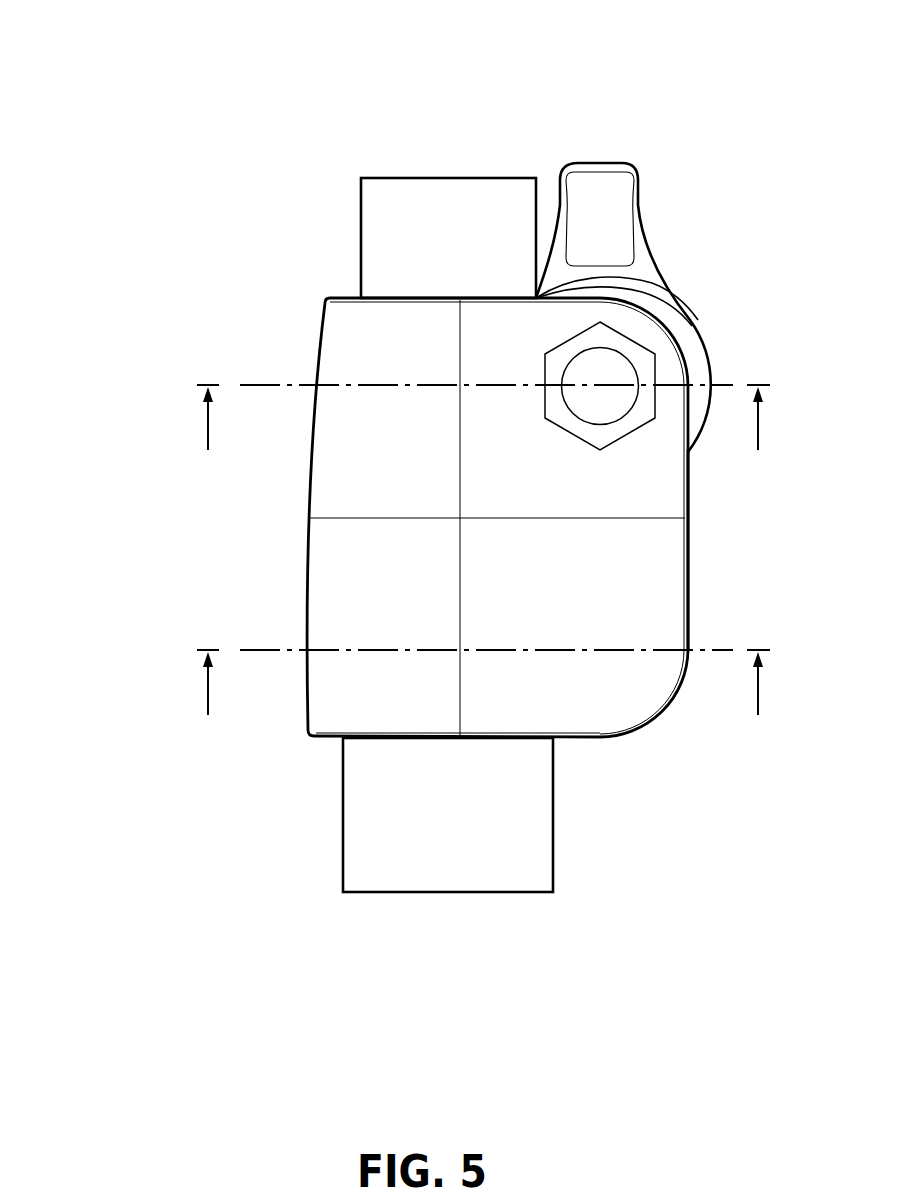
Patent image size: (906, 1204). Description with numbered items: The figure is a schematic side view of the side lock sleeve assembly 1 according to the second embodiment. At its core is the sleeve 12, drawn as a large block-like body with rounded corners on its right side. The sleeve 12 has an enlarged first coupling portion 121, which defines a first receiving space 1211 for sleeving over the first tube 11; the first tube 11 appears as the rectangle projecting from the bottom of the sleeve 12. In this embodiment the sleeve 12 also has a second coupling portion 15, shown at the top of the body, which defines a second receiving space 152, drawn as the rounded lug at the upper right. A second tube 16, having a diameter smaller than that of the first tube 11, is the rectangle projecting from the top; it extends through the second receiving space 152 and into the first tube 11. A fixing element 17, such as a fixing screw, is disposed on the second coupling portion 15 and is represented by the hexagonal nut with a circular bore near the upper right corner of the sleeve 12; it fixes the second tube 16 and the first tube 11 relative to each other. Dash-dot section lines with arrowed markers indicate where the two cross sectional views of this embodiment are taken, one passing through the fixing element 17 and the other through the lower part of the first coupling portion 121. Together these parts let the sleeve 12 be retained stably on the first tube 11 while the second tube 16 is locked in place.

The side lock sleeve assembly 1 is at (156, 349).
The first tube 11 is at (537, 874).
The sleeve 12 is at (665, 493).
The first coupling portion 121 is at (628, 635).
The first receiving space 1211 is at (560, 740).
The second coupling portion 15 is at (325, 358).
The second receiving space 152 is at (617, 343).
The second tube 16 is at (470, 190).
The fixing element 17 is at (618, 342).